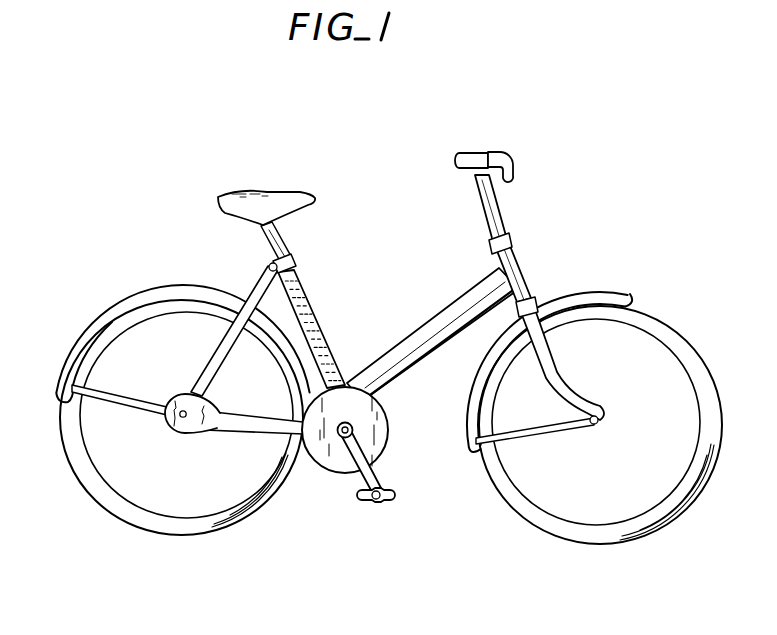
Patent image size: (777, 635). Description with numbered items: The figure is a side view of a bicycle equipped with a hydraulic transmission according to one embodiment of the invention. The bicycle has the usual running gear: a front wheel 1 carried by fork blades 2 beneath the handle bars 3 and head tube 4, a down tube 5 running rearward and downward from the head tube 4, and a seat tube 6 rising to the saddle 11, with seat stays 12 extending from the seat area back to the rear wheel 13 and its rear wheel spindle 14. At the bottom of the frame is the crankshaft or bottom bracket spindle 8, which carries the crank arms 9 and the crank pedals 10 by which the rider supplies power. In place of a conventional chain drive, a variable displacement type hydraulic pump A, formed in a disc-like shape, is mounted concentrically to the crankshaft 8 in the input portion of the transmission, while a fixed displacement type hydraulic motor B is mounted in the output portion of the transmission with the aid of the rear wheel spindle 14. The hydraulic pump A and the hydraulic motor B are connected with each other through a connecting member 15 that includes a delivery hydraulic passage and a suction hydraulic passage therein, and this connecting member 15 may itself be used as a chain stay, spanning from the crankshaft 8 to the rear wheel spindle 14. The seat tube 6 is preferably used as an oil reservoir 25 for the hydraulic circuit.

The front wheel 1 is at (687, 332).
The fork blades 2 is at (553, 352).
The handle bars 3 is at (511, 163).
The head tube 4 is at (515, 275).
The down tube 5 is at (411, 338).
The seat tube 6 is at (305, 270).
The crankshaft 8 is at (341, 439).
The crank arms 9 is at (362, 480).
The crank pedals 10 is at (374, 504).
The saddle 11 is at (253, 189).
The seat stays 12 is at (250, 284).
The rear wheel 13 is at (62, 448).
The rear wheel spindle 14 is at (184, 393).
The connecting member 15 is at (247, 435).
The oil reservoir 25 is at (300, 310).
The variable displacement type hydraulic pump A is at (388, 442).
The fixed displacement type hydraulic motor B is at (183, 433).